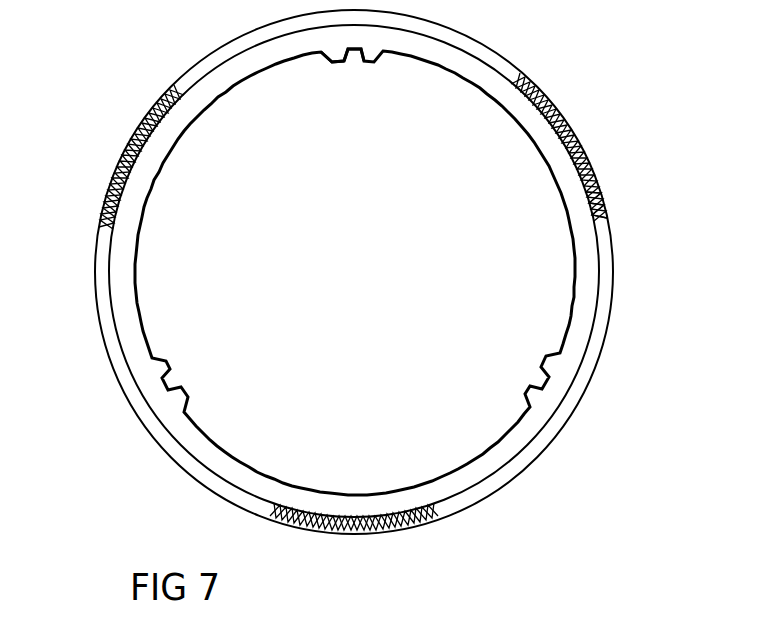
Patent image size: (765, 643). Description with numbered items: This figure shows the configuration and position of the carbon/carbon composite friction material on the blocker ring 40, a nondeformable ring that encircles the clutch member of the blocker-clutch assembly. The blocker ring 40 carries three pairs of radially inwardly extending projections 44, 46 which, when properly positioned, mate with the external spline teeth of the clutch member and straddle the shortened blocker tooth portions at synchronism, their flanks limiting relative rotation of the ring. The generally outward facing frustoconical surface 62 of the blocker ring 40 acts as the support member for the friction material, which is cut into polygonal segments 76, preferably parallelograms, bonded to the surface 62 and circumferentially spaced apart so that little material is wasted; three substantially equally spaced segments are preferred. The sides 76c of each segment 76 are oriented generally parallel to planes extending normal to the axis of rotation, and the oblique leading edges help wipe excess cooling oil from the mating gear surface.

The blocker ring 40 is at (122, 292).
The radially inwardly extending projection 44 is at (366, 64).
The radially inwardly extending projection 46 is at (328, 66).
The frustoconical surface 62 is at (594, 350).
The polygonal segment 76 is at (108, 188).
The side of segment 76c is at (591, 178).